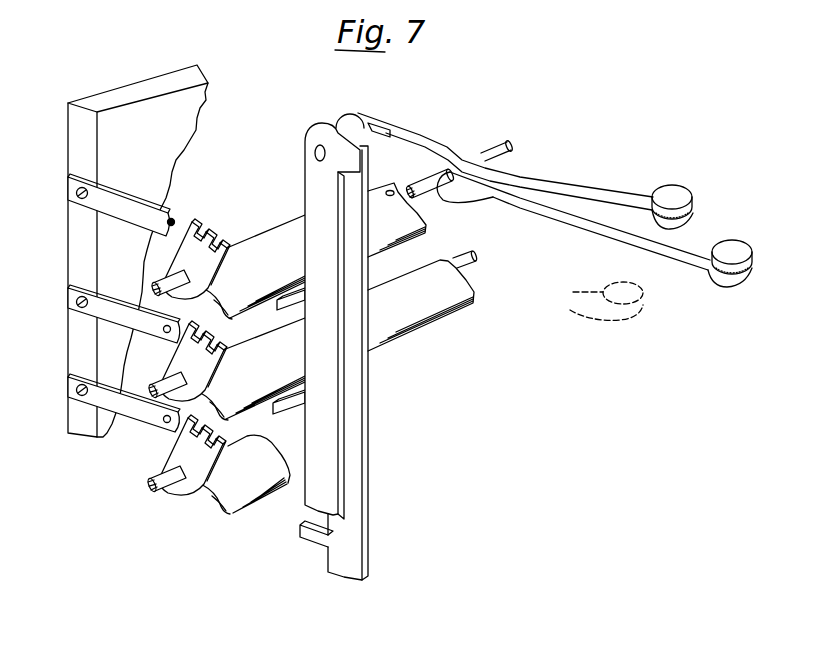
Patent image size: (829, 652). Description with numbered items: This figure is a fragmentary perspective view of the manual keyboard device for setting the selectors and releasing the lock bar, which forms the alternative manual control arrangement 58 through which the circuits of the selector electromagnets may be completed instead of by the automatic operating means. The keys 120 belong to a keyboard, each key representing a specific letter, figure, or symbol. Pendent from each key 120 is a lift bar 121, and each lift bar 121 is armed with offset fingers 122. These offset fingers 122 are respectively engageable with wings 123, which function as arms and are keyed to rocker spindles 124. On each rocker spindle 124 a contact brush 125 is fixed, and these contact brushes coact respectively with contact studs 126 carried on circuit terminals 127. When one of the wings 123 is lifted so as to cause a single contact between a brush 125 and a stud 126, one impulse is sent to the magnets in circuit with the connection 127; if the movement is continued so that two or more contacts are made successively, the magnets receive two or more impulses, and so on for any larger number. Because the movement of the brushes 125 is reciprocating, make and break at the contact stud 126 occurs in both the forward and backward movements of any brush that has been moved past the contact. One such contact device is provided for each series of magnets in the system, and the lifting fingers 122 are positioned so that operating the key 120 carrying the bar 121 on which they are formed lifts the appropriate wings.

The manual control arrangement 58 is at (164, 458).
The keys 120 is at (610, 233).
The lift bar 121 is at (333, 384).
The offset fingers 122 is at (283, 304).
The wings 123 is at (262, 254).
The rocker spindles 124 is at (150, 276).
The contact brush 125 is at (210, 236).
The contact studs 126 is at (171, 218).
The circuit terminals 127 is at (122, 202).